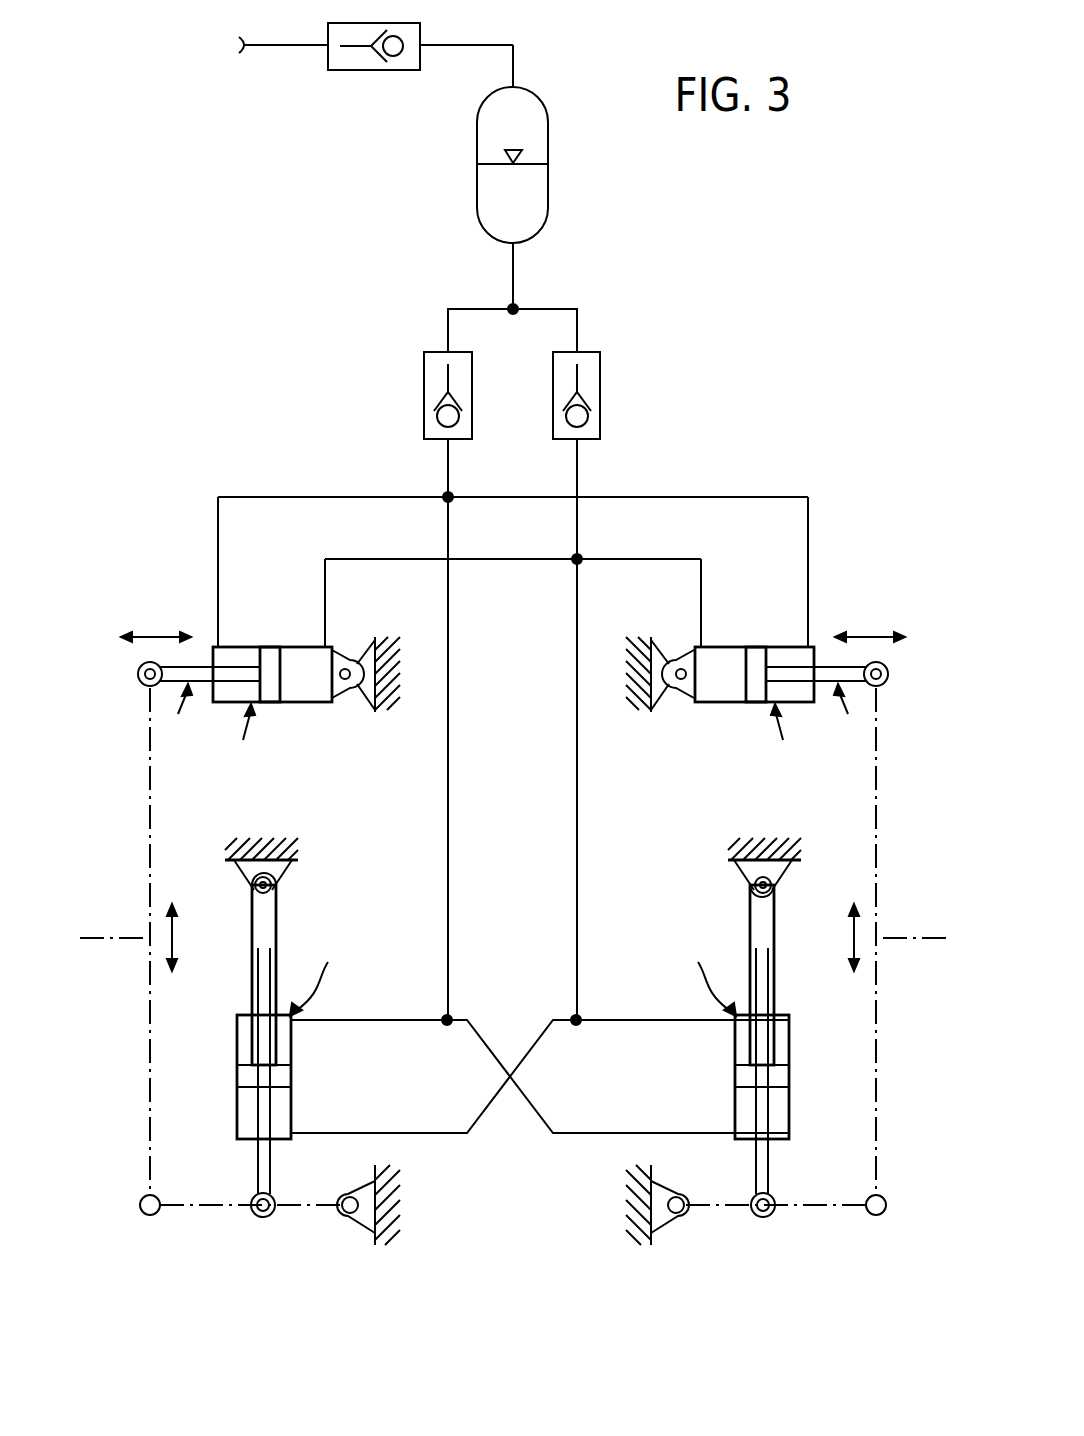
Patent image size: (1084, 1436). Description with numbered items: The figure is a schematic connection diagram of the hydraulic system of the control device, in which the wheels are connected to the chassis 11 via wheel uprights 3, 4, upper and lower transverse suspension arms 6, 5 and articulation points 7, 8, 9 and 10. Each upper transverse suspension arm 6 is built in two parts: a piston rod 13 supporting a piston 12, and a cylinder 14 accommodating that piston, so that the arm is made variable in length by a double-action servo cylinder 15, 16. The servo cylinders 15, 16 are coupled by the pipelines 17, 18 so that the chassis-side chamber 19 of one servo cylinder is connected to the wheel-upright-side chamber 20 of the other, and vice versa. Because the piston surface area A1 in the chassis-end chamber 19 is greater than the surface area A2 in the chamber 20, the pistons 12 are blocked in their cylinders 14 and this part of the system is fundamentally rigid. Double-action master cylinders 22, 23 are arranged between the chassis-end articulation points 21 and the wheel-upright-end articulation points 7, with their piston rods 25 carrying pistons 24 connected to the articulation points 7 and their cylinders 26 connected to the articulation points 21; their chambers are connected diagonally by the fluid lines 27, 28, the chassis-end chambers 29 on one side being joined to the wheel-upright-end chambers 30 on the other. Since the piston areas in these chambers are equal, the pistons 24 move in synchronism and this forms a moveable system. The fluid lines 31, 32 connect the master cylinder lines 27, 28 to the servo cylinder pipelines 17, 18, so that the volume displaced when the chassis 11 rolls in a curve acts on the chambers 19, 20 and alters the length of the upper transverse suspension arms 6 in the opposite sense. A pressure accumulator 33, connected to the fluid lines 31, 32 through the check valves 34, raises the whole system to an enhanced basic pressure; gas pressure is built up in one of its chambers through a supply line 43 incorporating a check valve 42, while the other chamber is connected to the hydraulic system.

The wheel upright 3 is at (150, 838).
The wheel upright 4 is at (876, 838).
The lower transverse suspension arm 5 is at (200, 1206).
The upper transverse suspension arm 6 is at (513, 711).
The articulation point 7 is at (150, 1214).
The articulation point 8 is at (348, 1213).
The articulation point 9 is at (138, 674).
The articulation point 10 is at (347, 668).
The chassis 11 is at (386, 652).
The piston 12 is at (280, 654).
The piston rod 13 is at (200, 666).
The cylinder 14 is at (268, 704).
The servo cylinder 15 is at (238, 736).
The servo cylinder 16 is at (792, 736).
The pipeline 17 is at (502, 559).
The pipeline 18 is at (502, 497).
The chassis-side chamber 19 is at (338, 700).
The wheel-upright-side chamber 20 is at (226, 698).
The chassis-end articulation point 21 is at (272, 886).
The master cylinder 22 is at (321, 975).
The master cylinder 23 is at (704, 975).
The piston 24 is at (280, 1074).
The piston rod 25 is at (258, 1167).
The cylinder 26 is at (291, 1106).
The fluid line 27 is at (424, 1133).
The fluid line 28 is at (608, 1133).
The chassis-end chamber 29 is at (244, 1030).
The wheel-upright-end chamber 30 is at (248, 1111).
The fluid line 31 is at (448, 796).
The fluid line 32 is at (577, 871).
The pressure accumulator 33 is at (534, 182).
The check valve 34 is at (424, 370).
The check valve 42 is at (372, 62).
The supply line 43 is at (288, 56).
The piston surface area A1 is at (292, 690).
The piston surface area A2 is at (254, 660).